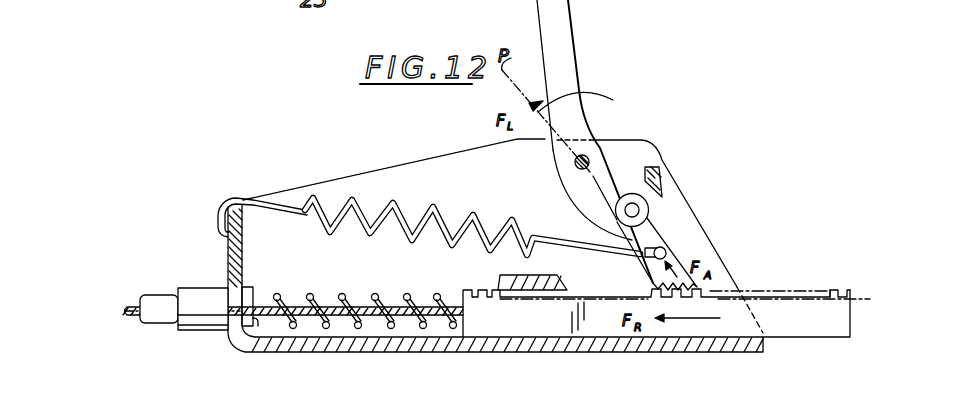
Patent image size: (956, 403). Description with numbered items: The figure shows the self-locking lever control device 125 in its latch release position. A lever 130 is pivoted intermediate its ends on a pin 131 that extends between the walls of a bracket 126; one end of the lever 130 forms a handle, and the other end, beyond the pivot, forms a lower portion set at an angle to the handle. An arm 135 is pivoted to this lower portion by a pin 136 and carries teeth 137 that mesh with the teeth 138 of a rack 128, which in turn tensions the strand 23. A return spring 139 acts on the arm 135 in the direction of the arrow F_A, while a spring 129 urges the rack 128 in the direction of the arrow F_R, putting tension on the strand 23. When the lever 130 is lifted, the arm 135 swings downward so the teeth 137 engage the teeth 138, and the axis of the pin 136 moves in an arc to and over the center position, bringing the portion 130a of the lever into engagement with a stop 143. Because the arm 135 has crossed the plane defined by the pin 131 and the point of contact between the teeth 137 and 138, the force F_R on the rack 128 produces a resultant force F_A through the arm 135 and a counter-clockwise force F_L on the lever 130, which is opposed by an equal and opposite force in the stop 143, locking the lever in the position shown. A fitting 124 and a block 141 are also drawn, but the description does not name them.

The strand 23 is at (333, 310).
The cable end fitting 124 is at (166, 292).
The self-locking lever control device 125 is at (290, 183).
The bracket 126 is at (378, 178).
The rack 128 is at (798, 325).
The spring 129 is at (425, 330).
The lever 130 is at (568, 42).
The portion of the lever 130a is at (575, 206).
The pin 131 is at (590, 157).
The arm 135 is at (668, 248).
The pin 136 is at (636, 210).
The teeth 137 is at (652, 283).
The teeth 138 is at (830, 290).
The return spring 139 is at (440, 200).
The stop block 141 is at (500, 281).
The stop 143 is at (662, 178).